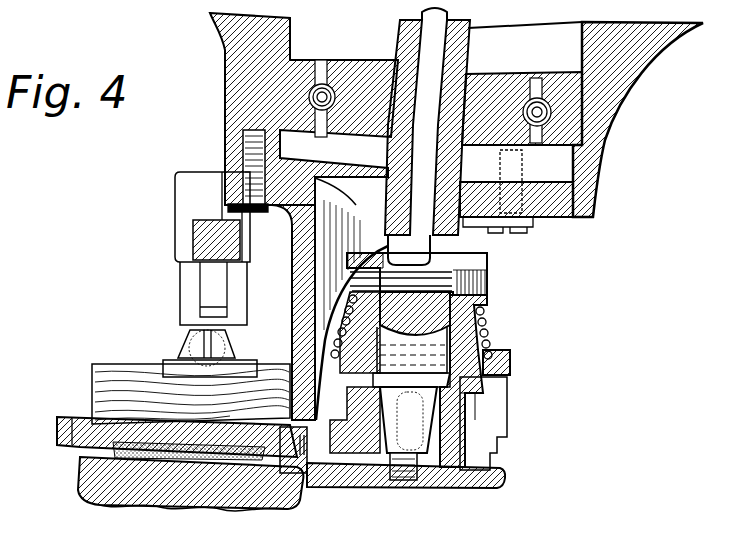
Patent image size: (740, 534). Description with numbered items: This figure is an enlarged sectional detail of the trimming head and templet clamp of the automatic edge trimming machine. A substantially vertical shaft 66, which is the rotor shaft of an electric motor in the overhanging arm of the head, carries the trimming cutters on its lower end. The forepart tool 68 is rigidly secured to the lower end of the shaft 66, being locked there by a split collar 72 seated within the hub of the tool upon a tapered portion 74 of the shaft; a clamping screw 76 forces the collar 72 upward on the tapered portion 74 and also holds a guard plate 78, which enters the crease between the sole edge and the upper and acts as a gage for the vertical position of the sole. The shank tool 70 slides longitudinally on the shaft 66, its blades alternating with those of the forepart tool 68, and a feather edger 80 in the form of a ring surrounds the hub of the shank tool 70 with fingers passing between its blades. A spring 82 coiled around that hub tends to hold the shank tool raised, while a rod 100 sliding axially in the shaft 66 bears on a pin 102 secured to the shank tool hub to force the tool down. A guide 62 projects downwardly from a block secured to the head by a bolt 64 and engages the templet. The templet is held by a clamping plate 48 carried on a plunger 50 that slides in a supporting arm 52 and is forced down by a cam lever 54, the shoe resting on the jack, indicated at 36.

The base 36 is at (95, 372).
The clamping plate 48 is at (185, 360).
The plunger 50 is at (200, 269).
The supporting arm 52 is at (193, 221).
The cam lever 54 is at (207, 285).
The guide 62 is at (295, 345).
The bolt 64 is at (243, 155).
The shaft 66 is at (470, 54).
The forepart tool 68 is at (473, 461).
The shank tool 70 is at (308, 468).
The split collar 72 is at (433, 455).
The tapered portion 74 is at (425, 405).
The clamping screw 76 is at (405, 488).
The guard plate 78 is at (480, 488).
The feather edger 80 is at (505, 385).
The spring 82 is at (493, 340).
The rod 100 is at (428, 46).
The pin 102 is at (452, 268).